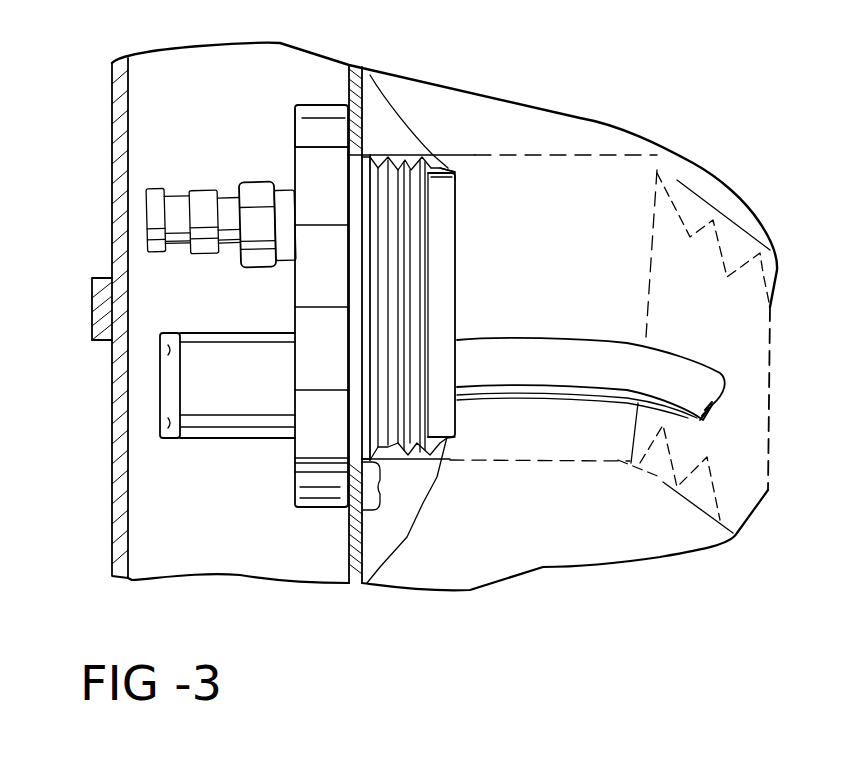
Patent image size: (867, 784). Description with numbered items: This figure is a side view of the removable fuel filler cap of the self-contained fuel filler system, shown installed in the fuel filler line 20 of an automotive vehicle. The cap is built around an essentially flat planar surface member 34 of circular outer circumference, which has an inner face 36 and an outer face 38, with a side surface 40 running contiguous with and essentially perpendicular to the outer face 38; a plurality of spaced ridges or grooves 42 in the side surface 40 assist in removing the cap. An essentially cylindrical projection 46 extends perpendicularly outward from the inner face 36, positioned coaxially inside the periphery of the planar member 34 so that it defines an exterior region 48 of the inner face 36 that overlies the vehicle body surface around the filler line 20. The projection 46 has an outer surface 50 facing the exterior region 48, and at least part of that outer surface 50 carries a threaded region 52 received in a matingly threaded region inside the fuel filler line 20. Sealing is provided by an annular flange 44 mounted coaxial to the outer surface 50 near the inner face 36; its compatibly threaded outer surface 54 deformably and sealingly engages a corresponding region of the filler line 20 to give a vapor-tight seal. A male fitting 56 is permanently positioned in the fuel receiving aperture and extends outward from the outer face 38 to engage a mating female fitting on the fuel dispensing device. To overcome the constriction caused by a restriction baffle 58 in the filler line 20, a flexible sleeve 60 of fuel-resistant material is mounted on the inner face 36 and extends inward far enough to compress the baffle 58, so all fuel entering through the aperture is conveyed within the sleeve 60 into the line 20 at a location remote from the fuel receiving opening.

The fuel filler line 20 is at (635, 120).
The flat planar surface member 34 is at (320, 508).
The inner face 36 is at (368, 152).
The outer face 38 is at (297, 107).
The side surface 40 is at (308, 102).
The ridges or grooves 42 is at (340, 230).
The annular flange 44 is at (380, 155).
The cylindrical projection 46 is at (455, 191).
The exterior region 48 is at (389, 486).
The outer surface 50 is at (448, 168).
The threaded region 52 is at (395, 442).
The threaded outer surface 54 is at (370, 152).
The fitting 56 is at (217, 440).
The restriction baffle 58 is at (732, 213).
The flexible sleeve 60 is at (560, 347).